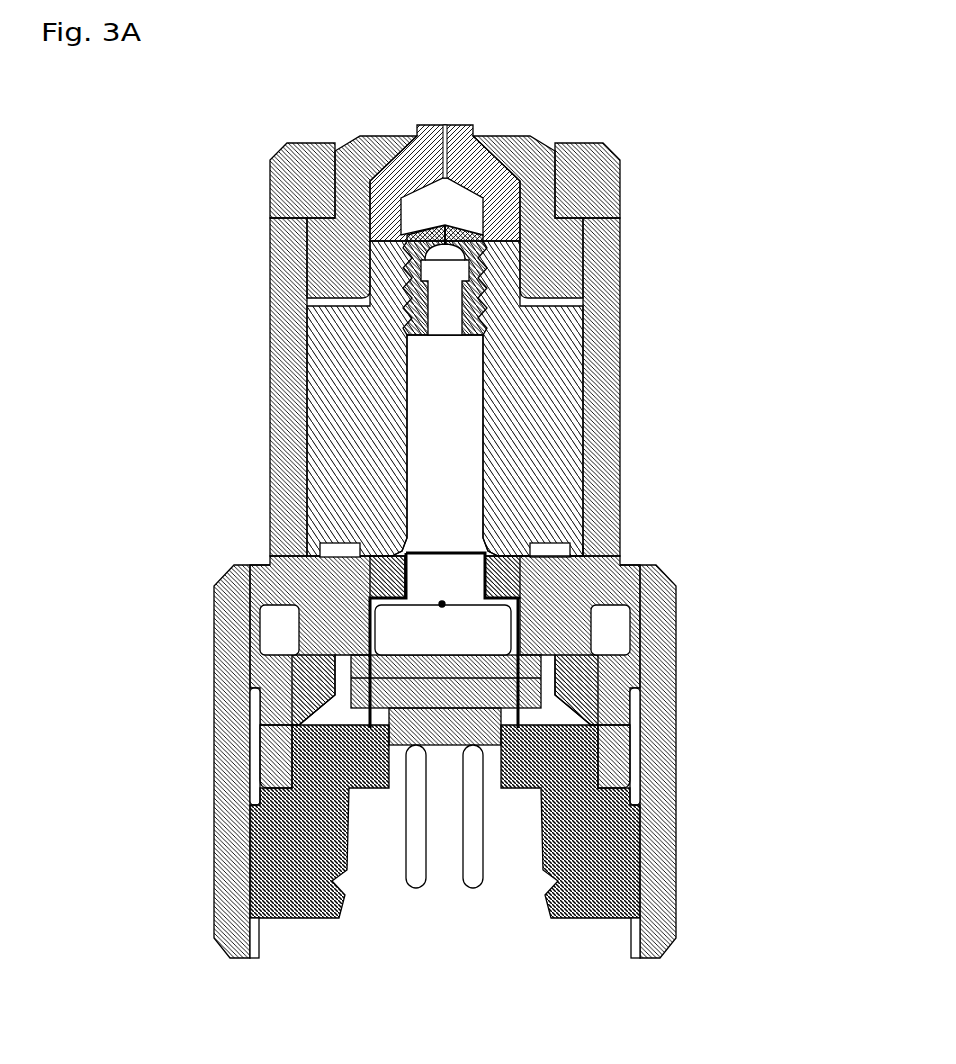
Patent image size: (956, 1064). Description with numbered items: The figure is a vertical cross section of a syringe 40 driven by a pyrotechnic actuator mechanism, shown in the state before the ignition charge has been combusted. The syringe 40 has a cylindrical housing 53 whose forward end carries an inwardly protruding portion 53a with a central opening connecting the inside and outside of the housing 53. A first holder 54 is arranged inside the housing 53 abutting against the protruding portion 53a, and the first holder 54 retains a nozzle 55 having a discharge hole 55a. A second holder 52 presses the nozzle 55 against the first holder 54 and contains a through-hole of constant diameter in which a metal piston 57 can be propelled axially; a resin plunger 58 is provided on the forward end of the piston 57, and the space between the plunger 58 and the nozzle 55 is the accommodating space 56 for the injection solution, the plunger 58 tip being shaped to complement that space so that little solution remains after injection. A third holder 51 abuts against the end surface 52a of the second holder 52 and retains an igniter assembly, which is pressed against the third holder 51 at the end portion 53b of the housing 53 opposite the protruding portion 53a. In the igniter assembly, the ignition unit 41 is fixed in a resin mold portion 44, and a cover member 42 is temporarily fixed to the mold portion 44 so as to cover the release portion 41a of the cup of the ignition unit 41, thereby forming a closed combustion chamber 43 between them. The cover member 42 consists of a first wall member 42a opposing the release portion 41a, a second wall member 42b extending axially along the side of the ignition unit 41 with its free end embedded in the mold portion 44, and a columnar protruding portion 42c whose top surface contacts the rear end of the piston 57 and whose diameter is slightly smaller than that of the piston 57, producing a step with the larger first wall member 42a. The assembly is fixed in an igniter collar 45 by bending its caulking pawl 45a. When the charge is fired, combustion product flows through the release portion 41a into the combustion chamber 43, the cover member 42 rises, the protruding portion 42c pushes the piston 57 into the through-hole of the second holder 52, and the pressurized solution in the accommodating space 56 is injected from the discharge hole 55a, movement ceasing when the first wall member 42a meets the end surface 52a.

The syringe 40 is at (638, 185).
The ignition unit 41 is at (580, 645).
The release portion 41a is at (610, 605).
The cover member 42 is at (430, 572).
The first wall member 42a is at (518, 578).
The second wall member 42b is at (380, 640).
The protruding portion 42c is at (330, 540).
The combustion chamber 43 is at (307, 544).
The mold portion 44 is at (438, 740).
The igniter collar 45 is at (292, 895).
The caulking pawl 45a is at (330, 668).
The third holder 51 is at (605, 763).
The second holder 52 is at (550, 428).
The end surface 52a is at (560, 552).
The housing 53 is at (588, 378).
The protruding portion 53a is at (572, 150).
The end portion 53b is at (640, 950).
The first holder 54 is at (510, 143).
The nozzle 55 is at (447, 125).
The discharge hole 55a is at (436, 116).
The accommodating space 56 is at (400, 207).
The piston 57 is at (450, 470).
The plunger 58 is at (407, 307).